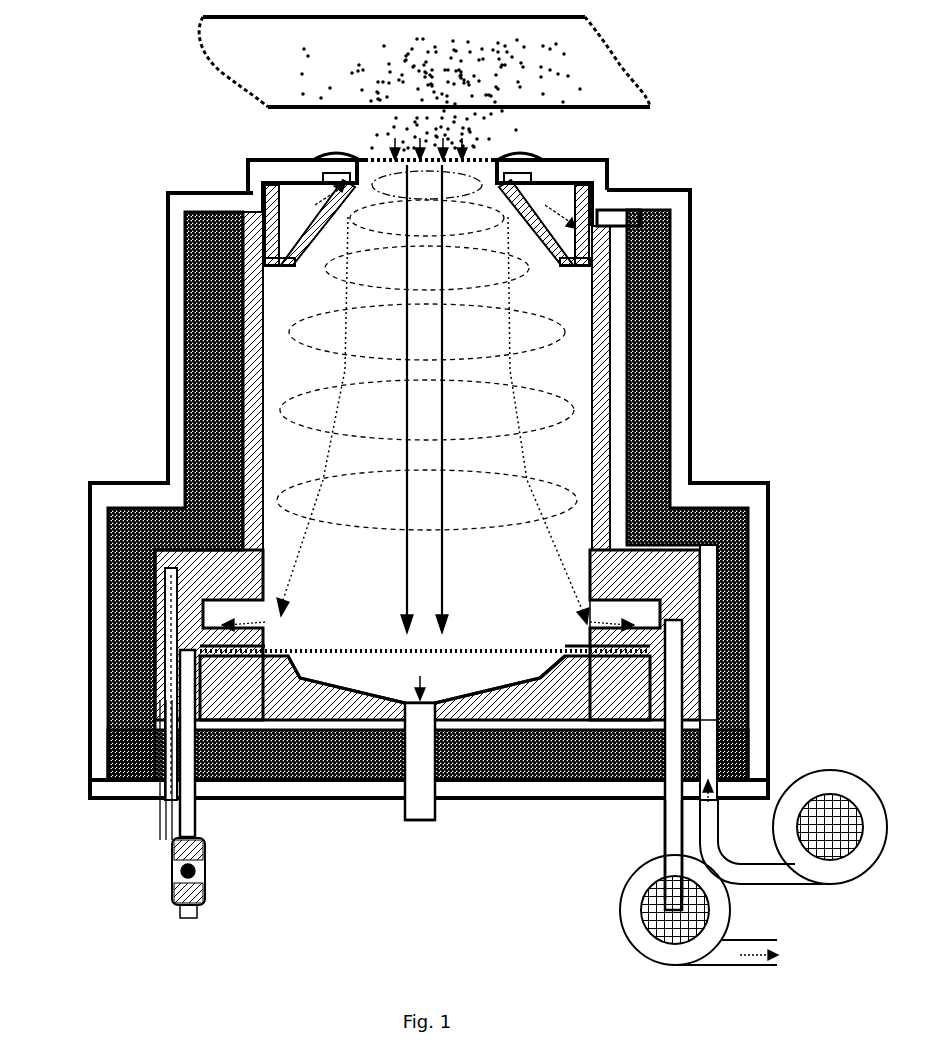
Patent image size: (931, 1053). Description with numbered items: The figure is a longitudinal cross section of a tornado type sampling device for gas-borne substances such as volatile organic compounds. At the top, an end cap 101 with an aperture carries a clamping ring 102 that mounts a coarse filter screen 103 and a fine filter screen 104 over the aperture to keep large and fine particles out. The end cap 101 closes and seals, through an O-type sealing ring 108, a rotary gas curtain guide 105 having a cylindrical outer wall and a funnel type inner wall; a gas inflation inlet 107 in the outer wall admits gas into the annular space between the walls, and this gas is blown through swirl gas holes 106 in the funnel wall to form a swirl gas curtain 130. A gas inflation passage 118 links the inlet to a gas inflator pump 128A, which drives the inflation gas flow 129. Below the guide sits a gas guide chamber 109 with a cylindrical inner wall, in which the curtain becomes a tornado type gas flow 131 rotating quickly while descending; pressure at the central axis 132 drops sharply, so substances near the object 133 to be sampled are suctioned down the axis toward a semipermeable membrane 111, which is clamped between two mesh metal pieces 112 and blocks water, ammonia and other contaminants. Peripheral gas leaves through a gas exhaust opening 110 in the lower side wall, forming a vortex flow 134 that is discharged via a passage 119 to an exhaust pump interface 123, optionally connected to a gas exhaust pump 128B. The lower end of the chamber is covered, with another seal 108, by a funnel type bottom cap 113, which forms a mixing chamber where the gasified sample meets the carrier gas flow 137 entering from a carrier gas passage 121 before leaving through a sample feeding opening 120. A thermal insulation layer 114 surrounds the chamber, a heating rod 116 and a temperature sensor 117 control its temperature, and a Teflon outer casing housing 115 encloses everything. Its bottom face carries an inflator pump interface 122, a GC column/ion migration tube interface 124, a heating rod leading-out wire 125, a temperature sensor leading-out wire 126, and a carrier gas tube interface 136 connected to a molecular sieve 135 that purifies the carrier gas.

The end cap 101 is at (248, 183).
The clamping ring 102 is at (505, 157).
The coarse filter screen 103 is at (385, 160).
The fine filter screen 104 is at (360, 162).
The rotary gas curtain guide 105 is at (262, 165).
The swirl gas holes 106 is at (560, 185).
The gas inflation inlet 107 is at (625, 212).
The O-type sealing ring 108 is at (215, 218).
The gas guide chamber 109 is at (601, 370).
The gas exhaust opening 110 is at (700, 572).
The semipermeable membrane 111 is at (703, 607).
The mesh metal pieces 112 is at (713, 653).
The funnel type bottom cap 113 is at (650, 718).
The thermal insulation layer 114 is at (650, 400).
The outer casing housing 115 is at (690, 460).
The heating rod 116 is at (175, 650).
The temperature sensor 117 is at (190, 680).
The gas inflation passage 118 is at (720, 700).
The passage 119 is at (747, 693).
The sample feeding opening 120 is at (436, 815).
The carrier gas passage 121 is at (600, 700).
The inflator pump interface 122 is at (665, 845).
The exhaust pump interface 123 is at (560, 673).
The GC column/ion migration tube interface 124 is at (447, 805).
The heating rod leading-out wire 125 is at (162, 812).
The temperature sensor leading-out wire 126 is at (158, 802).
The gas inflator pump 128A is at (858, 884).
The gas exhaust pump 128B is at (737, 902).
The inflation gas flow 129 is at (720, 778).
The swirl gas curtain 130 is at (567, 262).
The tornado type gas flow 131 is at (285, 395).
The central axis 132 is at (400, 490).
The object to be sampled 133 is at (627, 50).
The vortex flow 134 is at (290, 600).
The molecular sieve 135 is at (206, 878).
The carrier gas tube interface 136 is at (196, 805).
The carrier gas flow 137 is at (560, 700).